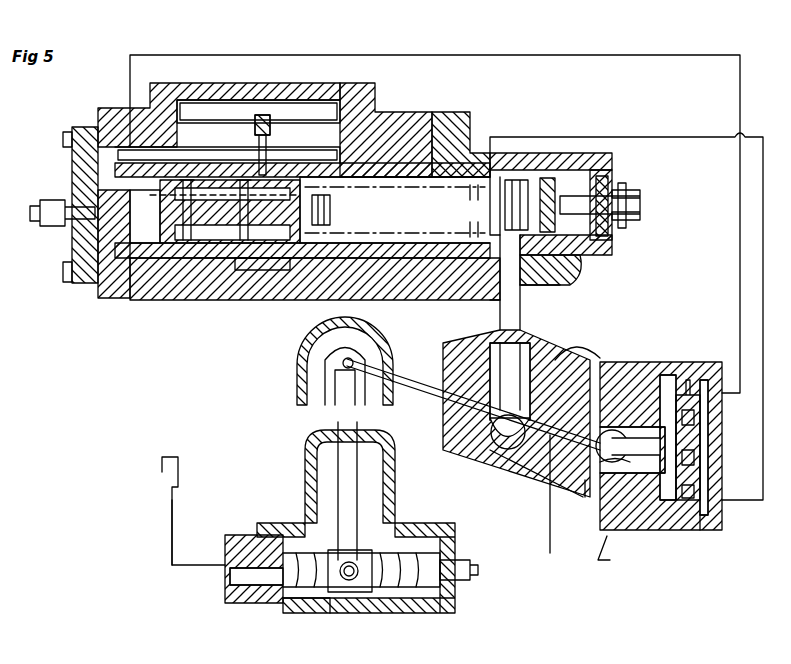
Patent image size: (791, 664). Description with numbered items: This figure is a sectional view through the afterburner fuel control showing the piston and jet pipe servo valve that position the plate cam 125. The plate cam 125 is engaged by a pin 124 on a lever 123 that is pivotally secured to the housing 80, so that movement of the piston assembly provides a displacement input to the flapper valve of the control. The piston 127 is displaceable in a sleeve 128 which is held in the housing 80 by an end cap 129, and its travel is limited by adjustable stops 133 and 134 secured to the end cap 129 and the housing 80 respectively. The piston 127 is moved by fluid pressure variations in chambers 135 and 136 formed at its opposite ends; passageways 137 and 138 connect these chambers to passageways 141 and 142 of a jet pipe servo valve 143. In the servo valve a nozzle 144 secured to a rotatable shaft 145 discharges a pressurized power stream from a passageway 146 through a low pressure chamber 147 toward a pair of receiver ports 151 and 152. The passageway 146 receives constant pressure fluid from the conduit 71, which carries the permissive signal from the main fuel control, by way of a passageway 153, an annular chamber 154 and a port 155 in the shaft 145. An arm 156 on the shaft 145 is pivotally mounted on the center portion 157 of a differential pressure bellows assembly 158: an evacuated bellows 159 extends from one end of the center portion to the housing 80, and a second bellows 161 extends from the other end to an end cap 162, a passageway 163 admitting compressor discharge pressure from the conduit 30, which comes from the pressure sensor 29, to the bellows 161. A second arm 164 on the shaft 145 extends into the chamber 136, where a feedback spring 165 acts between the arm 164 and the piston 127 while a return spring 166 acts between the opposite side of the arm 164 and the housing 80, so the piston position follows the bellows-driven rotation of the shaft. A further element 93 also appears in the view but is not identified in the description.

The pressure sensor 29 is at (162, 485).
The conduit 30 is at (172, 528).
The conduit 71 is at (550, 537).
The housing 80 is at (383, 112).
The passage 93 is at (250, 278).
The lever 123 is at (272, 126).
The pin 124 is at (272, 153).
The plate cam 125 is at (253, 135).
The piston 127 is at (277, 275).
The sleeve 128 is at (190, 248).
The end cap 129 is at (72, 256).
The adjustable stop 133 is at (62, 230).
The adjustable stop 134 is at (572, 268).
The chamber 135 is at (130, 258).
The chamber 136 is at (408, 216).
The passageway 137 is at (452, 70).
The passageway 138 is at (518, 137).
The passageway 141 is at (722, 370).
The passageway 142 is at (690, 535).
The jet pipe servo valve 143 is at (617, 555).
The nozzle 144 is at (640, 410).
The rotatable shaft 145 is at (430, 410).
The passageway 146 is at (592, 355).
The low pressure chamber 147 is at (585, 500).
The receiver port 151 is at (640, 438).
The receiver port 152 is at (630, 462).
The passageway 153 is at (540, 485).
The annular chamber 154 is at (560, 345).
The port 155 is at (510, 465).
The arm 156 is at (357, 487).
The center portion 157 is at (355, 610).
The differential pressure bellows assembly 158 is at (400, 600).
The evacuated bellows 159 is at (440, 598).
The second bellows 161 is at (285, 615).
The end cap 162 is at (240, 605).
The passageway 163 is at (230, 576).
The second arm 164 is at (520, 325).
The feedback spring 165 is at (468, 240).
The return spring 166 is at (525, 195).